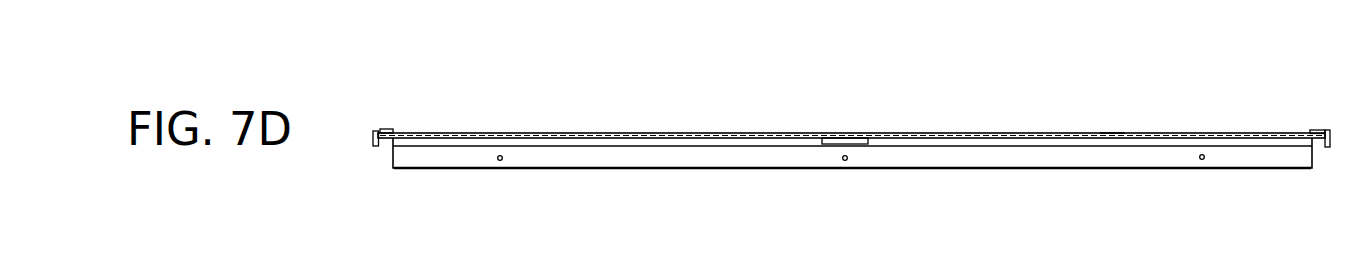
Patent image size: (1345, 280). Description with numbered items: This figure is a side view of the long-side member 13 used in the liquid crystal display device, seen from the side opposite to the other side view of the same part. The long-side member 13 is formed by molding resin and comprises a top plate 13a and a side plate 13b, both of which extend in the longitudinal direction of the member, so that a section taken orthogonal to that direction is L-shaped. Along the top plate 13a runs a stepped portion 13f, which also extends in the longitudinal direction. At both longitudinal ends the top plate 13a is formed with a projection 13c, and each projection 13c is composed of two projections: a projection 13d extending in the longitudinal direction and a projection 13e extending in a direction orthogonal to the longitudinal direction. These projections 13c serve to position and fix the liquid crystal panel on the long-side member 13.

The long-side member 13 is at (1225, 121).
The top plate 13a is at (581, 134).
The side plate 13b is at (641, 153).
The projection 13c is at (460, 82).
The projection extending in the longitudinal direction 13d is at (388, 129).
The projection extending orthogonal to the longitudinal direction 13e is at (375, 130).
The stepped portion 13f is at (1113, 134).